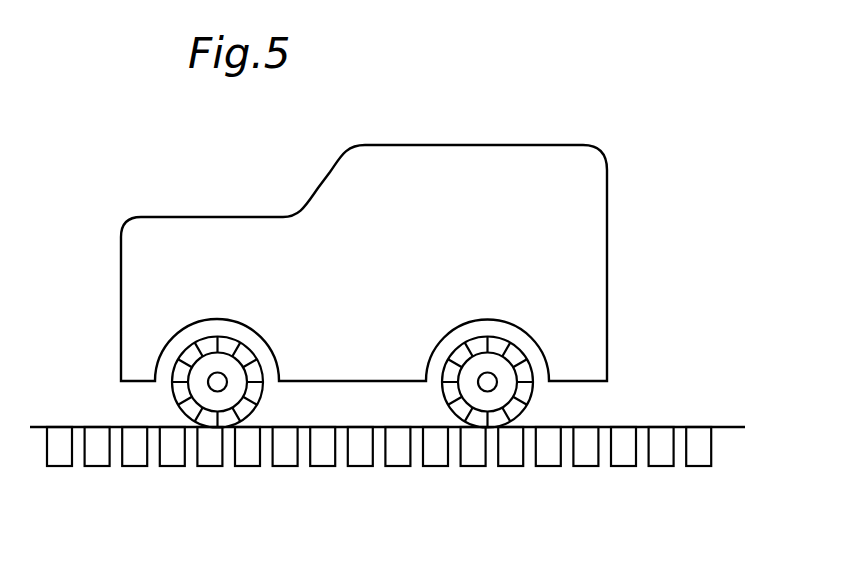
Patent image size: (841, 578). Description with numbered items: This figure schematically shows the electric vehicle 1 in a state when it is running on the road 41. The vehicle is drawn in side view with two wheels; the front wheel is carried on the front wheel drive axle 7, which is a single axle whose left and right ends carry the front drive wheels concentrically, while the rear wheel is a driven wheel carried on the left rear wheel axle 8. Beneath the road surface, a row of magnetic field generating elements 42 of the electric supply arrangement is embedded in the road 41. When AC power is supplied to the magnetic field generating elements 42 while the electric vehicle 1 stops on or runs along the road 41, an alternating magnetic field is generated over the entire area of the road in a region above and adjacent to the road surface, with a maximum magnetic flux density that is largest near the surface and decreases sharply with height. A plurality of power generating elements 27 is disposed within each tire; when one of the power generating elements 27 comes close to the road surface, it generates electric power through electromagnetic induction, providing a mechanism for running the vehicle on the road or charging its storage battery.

The electric vehicle 1 is at (607, 218).
The power generating elements 27 is at (177, 393).
The front wheel drive axle 7 is at (226, 384).
The left rear wheel axle 8 is at (478, 385).
The road 41 is at (642, 428).
The magnetic field generating elements 42 is at (62, 457).